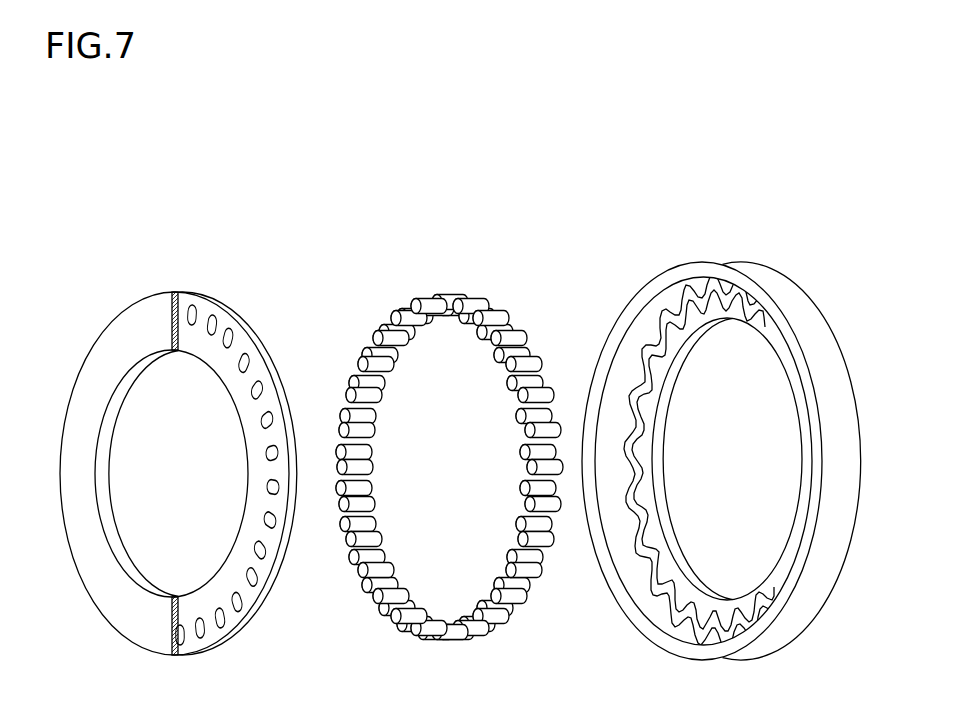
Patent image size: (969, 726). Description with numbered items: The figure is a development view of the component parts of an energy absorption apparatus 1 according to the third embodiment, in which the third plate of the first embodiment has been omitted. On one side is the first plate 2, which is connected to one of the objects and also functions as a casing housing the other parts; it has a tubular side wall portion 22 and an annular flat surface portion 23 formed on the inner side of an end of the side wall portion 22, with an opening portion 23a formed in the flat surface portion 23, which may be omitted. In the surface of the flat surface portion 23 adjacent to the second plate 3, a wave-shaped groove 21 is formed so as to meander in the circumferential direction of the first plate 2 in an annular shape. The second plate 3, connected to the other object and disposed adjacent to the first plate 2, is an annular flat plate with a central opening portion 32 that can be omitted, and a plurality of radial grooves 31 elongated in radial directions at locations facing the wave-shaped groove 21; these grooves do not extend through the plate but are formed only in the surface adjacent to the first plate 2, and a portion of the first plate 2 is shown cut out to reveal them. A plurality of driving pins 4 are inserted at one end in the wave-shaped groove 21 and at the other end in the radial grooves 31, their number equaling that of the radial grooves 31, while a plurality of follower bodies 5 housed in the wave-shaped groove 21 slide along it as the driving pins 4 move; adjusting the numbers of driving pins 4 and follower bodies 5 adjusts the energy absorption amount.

The energy absorption apparatus 1 is at (226, 170).
The first plate 2 is at (621, 280).
The wave-shaped groove 21 is at (641, 468).
The side wall portion 22 is at (745, 268).
The flat surface portion 23 is at (642, 428).
The opening portion 23a is at (663, 520).
The second plate 3 is at (89, 295).
The radial grooves 31 is at (191, 304).
The opening portion 32 is at (108, 471).
The driving pins 4 is at (365, 450).
The follower bodies 5 is at (497, 310).